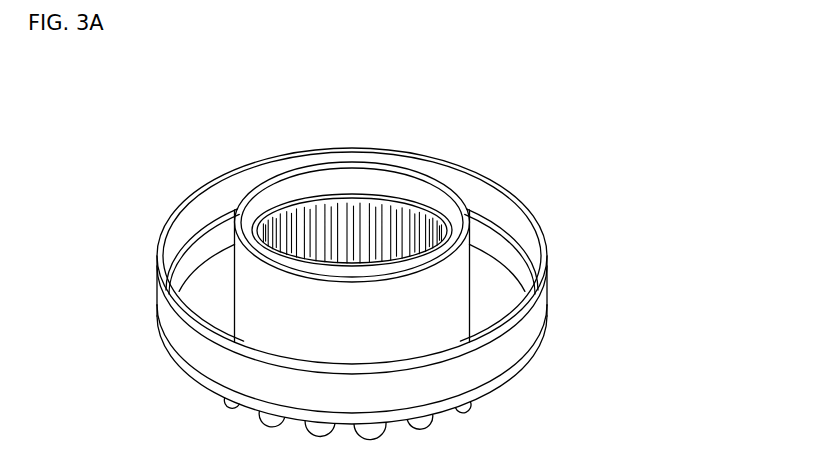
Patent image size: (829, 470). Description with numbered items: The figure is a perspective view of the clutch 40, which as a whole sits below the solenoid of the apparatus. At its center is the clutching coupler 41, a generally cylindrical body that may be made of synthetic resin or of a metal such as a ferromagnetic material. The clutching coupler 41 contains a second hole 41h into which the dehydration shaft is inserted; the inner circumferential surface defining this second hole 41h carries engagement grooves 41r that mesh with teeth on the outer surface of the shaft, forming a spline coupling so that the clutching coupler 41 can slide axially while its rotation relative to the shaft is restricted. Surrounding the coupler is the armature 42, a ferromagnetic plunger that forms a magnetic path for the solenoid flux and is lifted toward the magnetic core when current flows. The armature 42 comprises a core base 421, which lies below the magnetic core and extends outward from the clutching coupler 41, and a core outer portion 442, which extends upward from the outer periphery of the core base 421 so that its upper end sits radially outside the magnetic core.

The clutch 40 is at (95, 108).
The clutching coupler 41 is at (463, 211).
The second hole 41h is at (338, 248).
The engagement grooves 41r is at (374, 210).
The armature 42 is at (722, 315).
The core base 421 is at (490, 308).
The core outer portion 442 is at (515, 343).